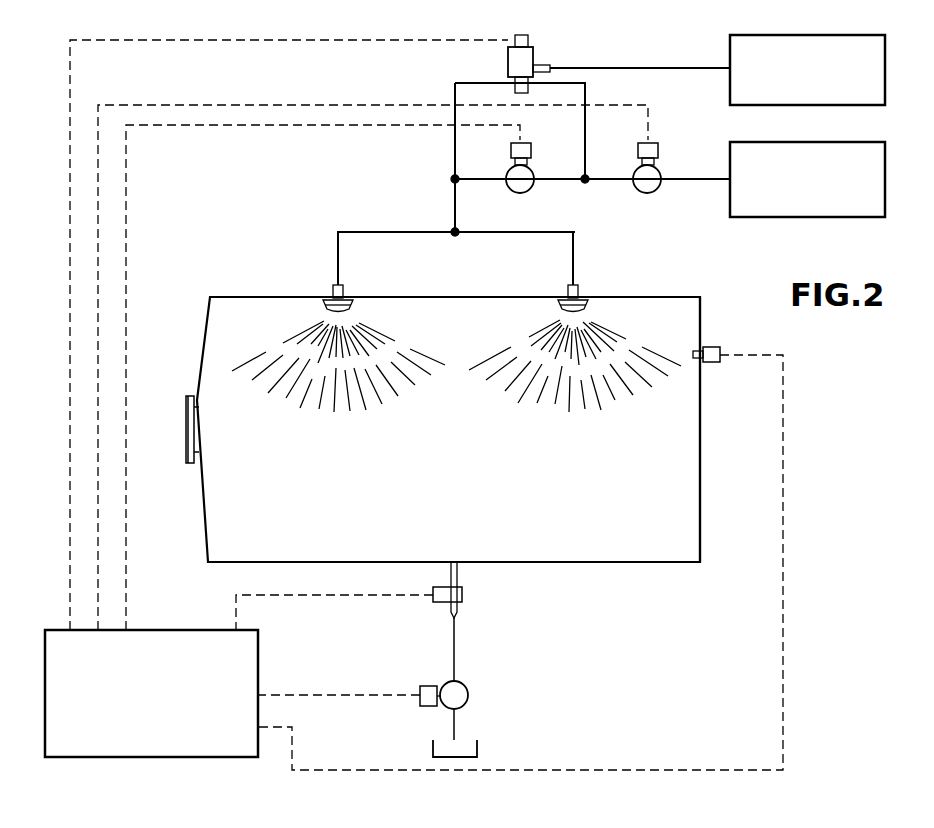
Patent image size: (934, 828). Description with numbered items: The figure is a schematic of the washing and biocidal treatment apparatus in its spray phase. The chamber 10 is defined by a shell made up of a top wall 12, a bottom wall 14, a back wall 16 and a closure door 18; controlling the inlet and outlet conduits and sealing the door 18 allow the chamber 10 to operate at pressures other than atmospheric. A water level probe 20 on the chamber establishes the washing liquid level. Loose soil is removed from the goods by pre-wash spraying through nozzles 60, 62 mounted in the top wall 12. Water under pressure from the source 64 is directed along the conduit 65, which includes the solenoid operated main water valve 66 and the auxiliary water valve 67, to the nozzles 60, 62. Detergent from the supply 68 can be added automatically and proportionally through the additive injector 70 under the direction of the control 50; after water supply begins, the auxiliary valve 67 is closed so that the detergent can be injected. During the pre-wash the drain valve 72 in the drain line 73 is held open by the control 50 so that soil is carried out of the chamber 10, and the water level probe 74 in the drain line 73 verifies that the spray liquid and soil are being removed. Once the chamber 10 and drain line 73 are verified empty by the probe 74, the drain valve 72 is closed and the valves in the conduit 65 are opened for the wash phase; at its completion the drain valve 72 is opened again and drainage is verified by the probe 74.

The chamber 10 is at (474, 434).
The top wall 12 is at (458, 292).
The bottom wall 14 is at (646, 564).
The back wall 16 is at (702, 450).
The closure door 18 is at (200, 512).
The water level probe 20 is at (754, 342).
The control 50 is at (45, 742).
The nozzle 60 is at (580, 293).
The nozzle 62 is at (332, 292).
The water source 64 is at (842, 218).
The conduit 65 is at (690, 182).
The main water valve 66 is at (660, 170).
The auxiliary water valve 67 is at (532, 170).
The detergent supply 68 is at (835, 34).
The additive injector 70 is at (524, 50).
The drain valve 72 is at (468, 688).
The drain line 73 is at (459, 568).
The water level probe 74 is at (444, 592).